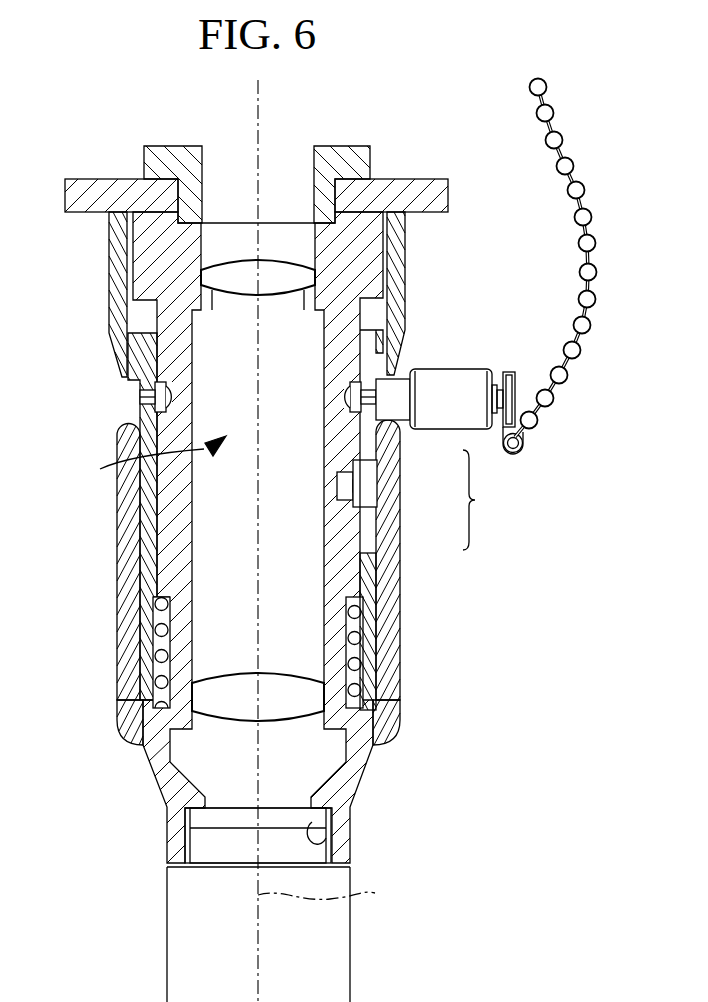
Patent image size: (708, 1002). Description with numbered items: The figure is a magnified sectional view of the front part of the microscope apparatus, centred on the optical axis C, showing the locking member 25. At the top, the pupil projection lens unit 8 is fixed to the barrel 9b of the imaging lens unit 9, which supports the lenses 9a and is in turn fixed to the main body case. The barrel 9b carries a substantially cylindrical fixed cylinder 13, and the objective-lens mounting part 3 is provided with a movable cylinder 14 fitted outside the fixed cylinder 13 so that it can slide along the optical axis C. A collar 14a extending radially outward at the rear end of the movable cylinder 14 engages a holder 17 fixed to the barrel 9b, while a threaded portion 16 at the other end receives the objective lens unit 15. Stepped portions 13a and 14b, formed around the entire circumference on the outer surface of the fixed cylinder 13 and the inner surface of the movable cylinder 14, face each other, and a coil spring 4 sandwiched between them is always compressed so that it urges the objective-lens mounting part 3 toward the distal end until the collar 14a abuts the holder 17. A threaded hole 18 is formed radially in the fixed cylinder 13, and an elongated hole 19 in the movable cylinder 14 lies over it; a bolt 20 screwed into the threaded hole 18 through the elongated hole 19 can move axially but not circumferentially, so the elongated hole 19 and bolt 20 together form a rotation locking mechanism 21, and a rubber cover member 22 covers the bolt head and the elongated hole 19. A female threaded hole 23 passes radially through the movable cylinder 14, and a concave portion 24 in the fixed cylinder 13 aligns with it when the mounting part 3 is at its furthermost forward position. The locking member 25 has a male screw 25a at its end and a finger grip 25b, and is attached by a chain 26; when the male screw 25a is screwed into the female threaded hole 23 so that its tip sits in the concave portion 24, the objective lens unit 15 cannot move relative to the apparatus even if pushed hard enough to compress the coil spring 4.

The objective-lens mounting part 3 is at (365, 775).
The coil spring 4 is at (160, 655).
The pupil projection lens unit 8 is at (371, 156).
The imaging lens unit 9 is at (154, 460).
The lenses 9a is at (300, 268).
The barrel 9b is at (425, 213).
The fixed cylinder 13 is at (160, 566).
The stepped portion 13a is at (153, 603).
The movable cylinder 14 is at (132, 513).
The collar 14a is at (120, 355).
The stepped portion 14b is at (130, 710).
The objective lens unit 15 is at (350, 920).
The threaded portion 16 is at (330, 845).
The holder 17 is at (407, 285).
The threaded hole 18 is at (338, 490).
The elongated hole 19 is at (368, 555).
The bolt 20 is at (372, 474).
The rotation locking mechanism 21 is at (488, 500).
The cover member 22 is at (402, 690).
The female threaded hole 23 is at (150, 392).
The concave portion 24 is at (155, 404).
The locking member 25 is at (463, 421).
The male screw 25a is at (372, 385).
The finger grip 25b is at (446, 378).
The chain 26 is at (590, 214).
The optical axis C is at (326, 896).